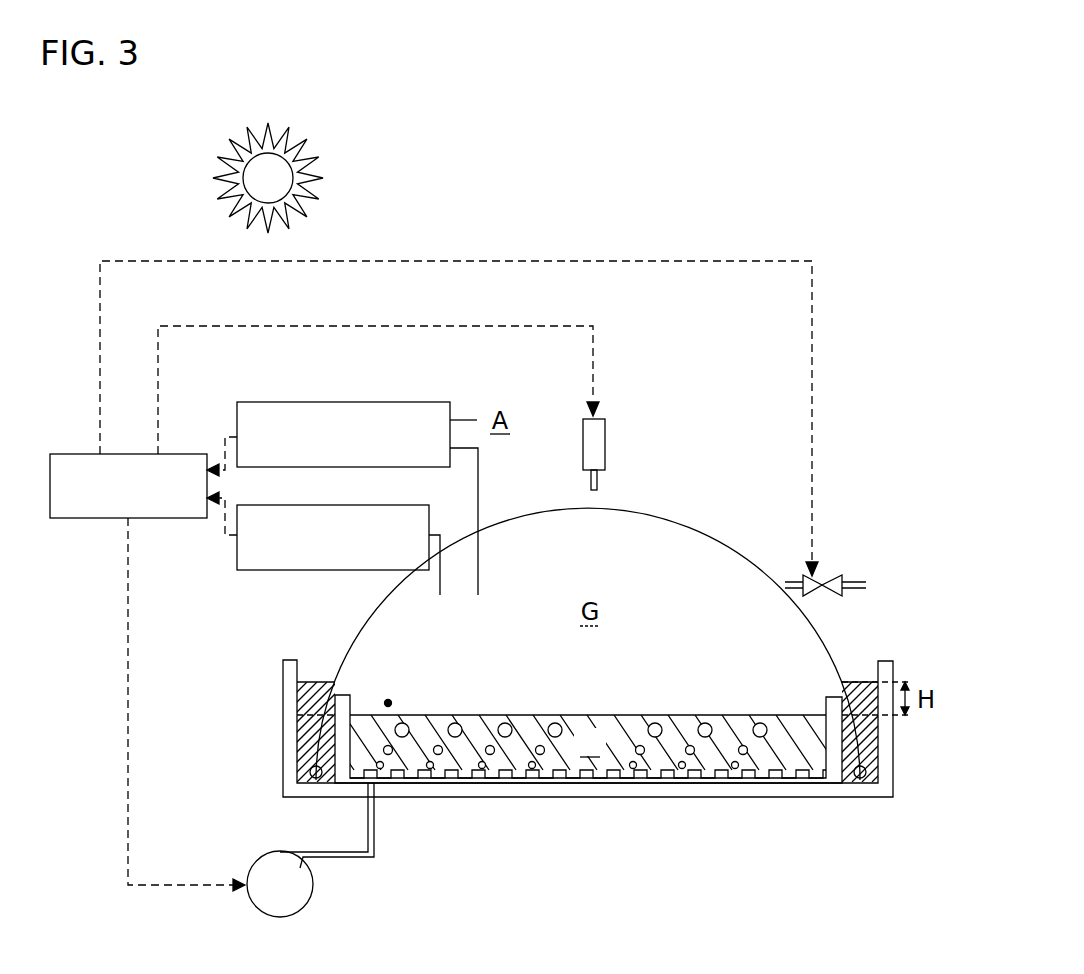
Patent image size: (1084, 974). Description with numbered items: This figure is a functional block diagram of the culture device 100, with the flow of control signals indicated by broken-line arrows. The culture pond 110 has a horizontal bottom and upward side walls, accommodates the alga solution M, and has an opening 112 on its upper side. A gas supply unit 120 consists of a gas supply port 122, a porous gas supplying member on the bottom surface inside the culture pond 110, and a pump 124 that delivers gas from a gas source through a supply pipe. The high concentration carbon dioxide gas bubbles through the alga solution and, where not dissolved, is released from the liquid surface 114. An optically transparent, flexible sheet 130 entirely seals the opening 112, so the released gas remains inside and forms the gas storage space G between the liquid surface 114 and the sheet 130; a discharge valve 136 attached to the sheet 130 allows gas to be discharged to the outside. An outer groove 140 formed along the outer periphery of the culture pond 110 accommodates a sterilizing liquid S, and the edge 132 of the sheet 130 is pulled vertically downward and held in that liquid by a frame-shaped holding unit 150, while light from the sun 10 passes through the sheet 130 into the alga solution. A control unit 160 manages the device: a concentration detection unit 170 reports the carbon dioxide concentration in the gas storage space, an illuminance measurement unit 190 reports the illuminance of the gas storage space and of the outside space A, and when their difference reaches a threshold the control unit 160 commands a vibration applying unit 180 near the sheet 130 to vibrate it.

The sun 10 is at (290, 144).
The culture device 100 is at (782, 222).
The culture pond 110 is at (508, 797).
The opening 112 is at (388, 703).
The liquid surface 114 is at (711, 713).
The gas supply unit 120 is at (432, 818).
The gas supply port 122 is at (392, 785).
The pump 124 is at (305, 866).
The sheet 130 is at (662, 511).
The edge 132 is at (318, 770).
The discharge valve 136 is at (832, 576).
The outer groove 140 is at (283, 668).
The holding unit 150 is at (317, 788).
The control unit 160 is at (186, 454).
The concentration detection unit 170 is at (404, 505).
The vibration applying unit 180 is at (606, 438).
The illuminance measurement unit 190 is at (394, 402).